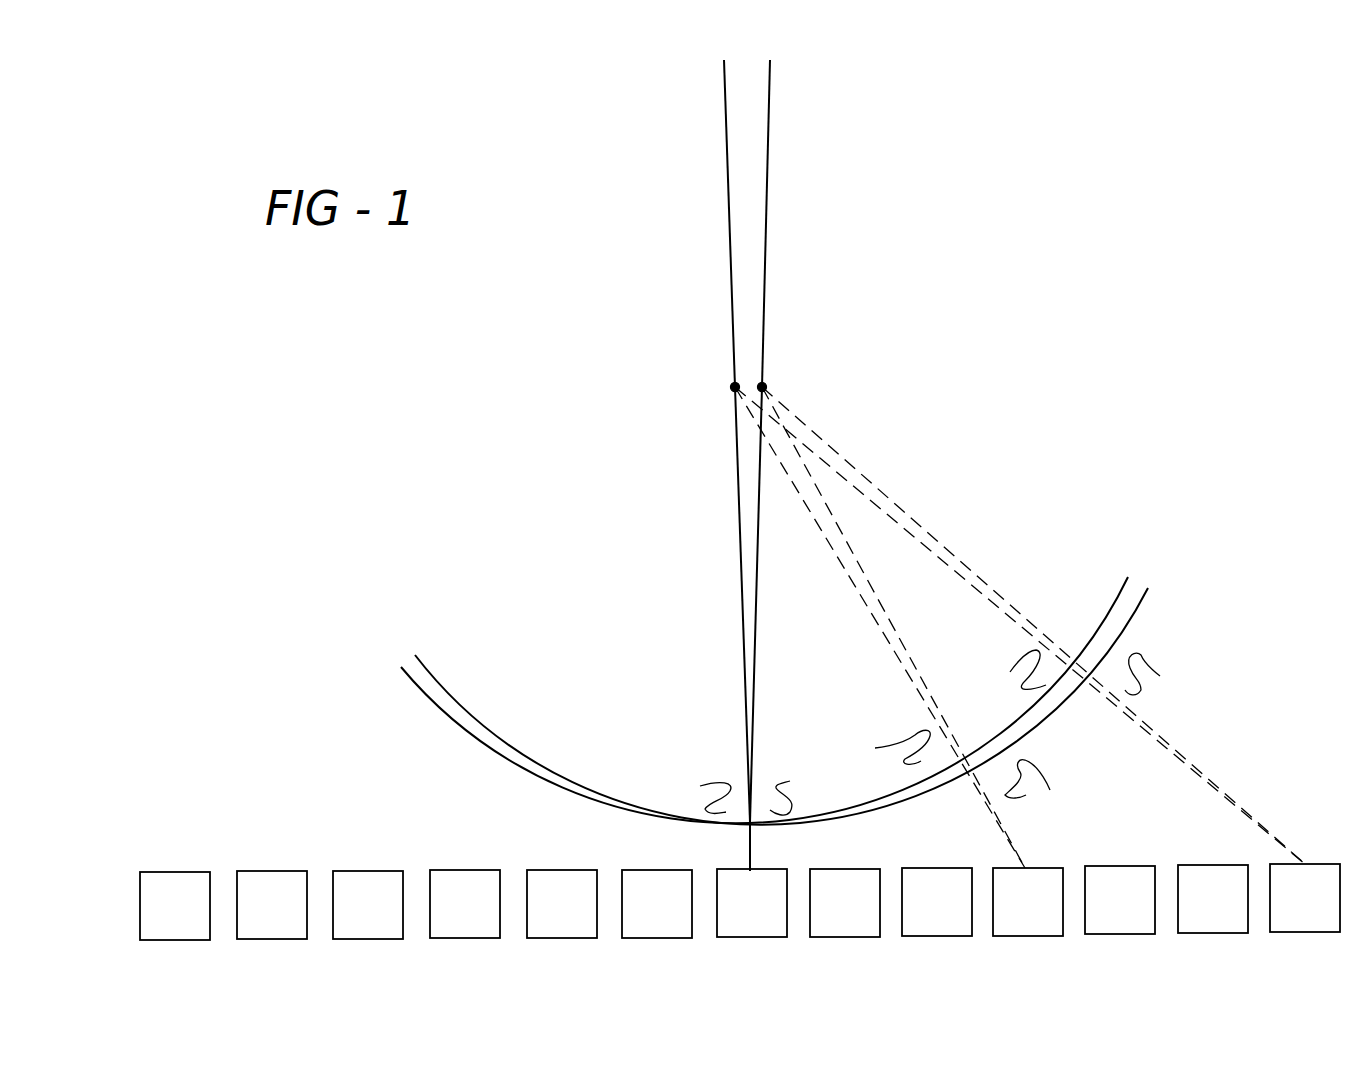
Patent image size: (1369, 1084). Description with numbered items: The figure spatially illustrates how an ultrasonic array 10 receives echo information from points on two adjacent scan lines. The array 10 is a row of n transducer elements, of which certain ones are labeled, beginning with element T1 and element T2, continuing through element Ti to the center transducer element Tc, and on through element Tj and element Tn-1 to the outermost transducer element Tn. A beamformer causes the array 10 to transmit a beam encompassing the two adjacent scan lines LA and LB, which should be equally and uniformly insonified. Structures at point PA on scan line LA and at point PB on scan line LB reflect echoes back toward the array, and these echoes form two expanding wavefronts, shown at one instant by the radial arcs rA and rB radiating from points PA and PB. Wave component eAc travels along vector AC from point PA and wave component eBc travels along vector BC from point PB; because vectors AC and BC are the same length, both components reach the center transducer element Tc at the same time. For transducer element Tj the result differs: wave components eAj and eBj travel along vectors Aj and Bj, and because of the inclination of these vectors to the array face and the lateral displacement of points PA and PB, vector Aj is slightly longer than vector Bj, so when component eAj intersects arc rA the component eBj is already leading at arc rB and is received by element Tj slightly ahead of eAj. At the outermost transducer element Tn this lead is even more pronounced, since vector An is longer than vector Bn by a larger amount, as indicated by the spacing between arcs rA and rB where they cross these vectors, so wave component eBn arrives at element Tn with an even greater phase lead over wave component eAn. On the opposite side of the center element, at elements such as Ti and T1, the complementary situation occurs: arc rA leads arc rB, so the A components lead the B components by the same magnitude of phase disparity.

The array 10 is at (709, 858).
The scan line LA is at (724, 138).
The scan line LB is at (770, 137).
The point PA is at (735, 387).
The point PB is at (762, 387).
The vector AC is at (742, 637).
The vector BC is at (756, 621).
The radial arc rA is at (1110, 599).
The radial arc rB is at (432, 670).
The vector Aj is at (903, 649).
The vector Bj is at (906, 645).
The vector An is at (1150, 735).
The vector Bn is at (1145, 720).
The wave component eAc is at (700, 786).
The wave component eBc is at (790, 781).
The wave component eAj is at (875, 748).
The wave component eBj is at (1050, 790).
The wave component eAn is at (1010, 672).
The wave component eBn is at (1160, 676).
The transducer element T1 is at (175, 906).
The transducer element T2 is at (272, 905).
The transducer element Ti is at (465, 904).
The center transducer element Tc is at (752, 903).
The transducer element Tj is at (1028, 902).
The transducer element Tn-1 is at (1213, 899).
The outermost transducer element Tn is at (1305, 898).